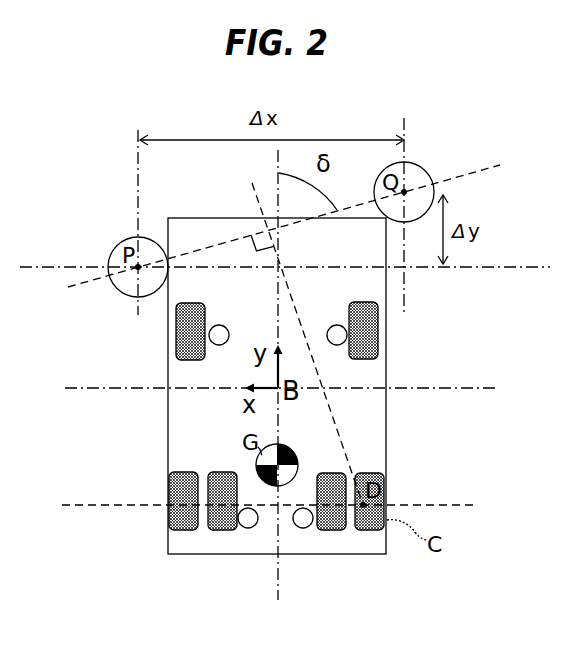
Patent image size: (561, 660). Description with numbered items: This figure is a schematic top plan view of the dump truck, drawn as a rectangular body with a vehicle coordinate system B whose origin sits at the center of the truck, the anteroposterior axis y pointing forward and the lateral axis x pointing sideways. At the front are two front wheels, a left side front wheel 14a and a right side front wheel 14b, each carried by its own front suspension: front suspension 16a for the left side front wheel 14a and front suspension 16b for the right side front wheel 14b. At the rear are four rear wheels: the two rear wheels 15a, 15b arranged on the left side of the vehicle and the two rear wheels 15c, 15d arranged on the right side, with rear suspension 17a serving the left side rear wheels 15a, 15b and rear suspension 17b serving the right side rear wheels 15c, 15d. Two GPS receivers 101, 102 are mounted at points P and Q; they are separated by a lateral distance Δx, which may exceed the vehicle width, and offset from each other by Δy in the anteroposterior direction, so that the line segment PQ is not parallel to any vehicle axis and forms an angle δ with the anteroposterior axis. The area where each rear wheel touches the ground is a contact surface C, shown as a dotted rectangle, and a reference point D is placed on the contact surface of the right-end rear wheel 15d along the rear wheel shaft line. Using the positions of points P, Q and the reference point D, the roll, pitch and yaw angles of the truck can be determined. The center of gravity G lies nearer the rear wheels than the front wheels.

The GPS receiver 101 is at (117, 246).
The GPS receiver 102 is at (425, 171).
The left side front wheel 14a is at (176, 335).
The right side front wheel 14b is at (378, 335).
The rear wheel 15a is at (186, 530).
The rear wheel 15b is at (222, 530).
The rear wheel 15c is at (333, 530).
The rear wheel 15d is at (370, 530).
The front suspension 16a is at (216, 345).
The front suspension 16b is at (333, 345).
The rear suspension 17a is at (248, 528).
The rear suspension 17b is at (303, 528).